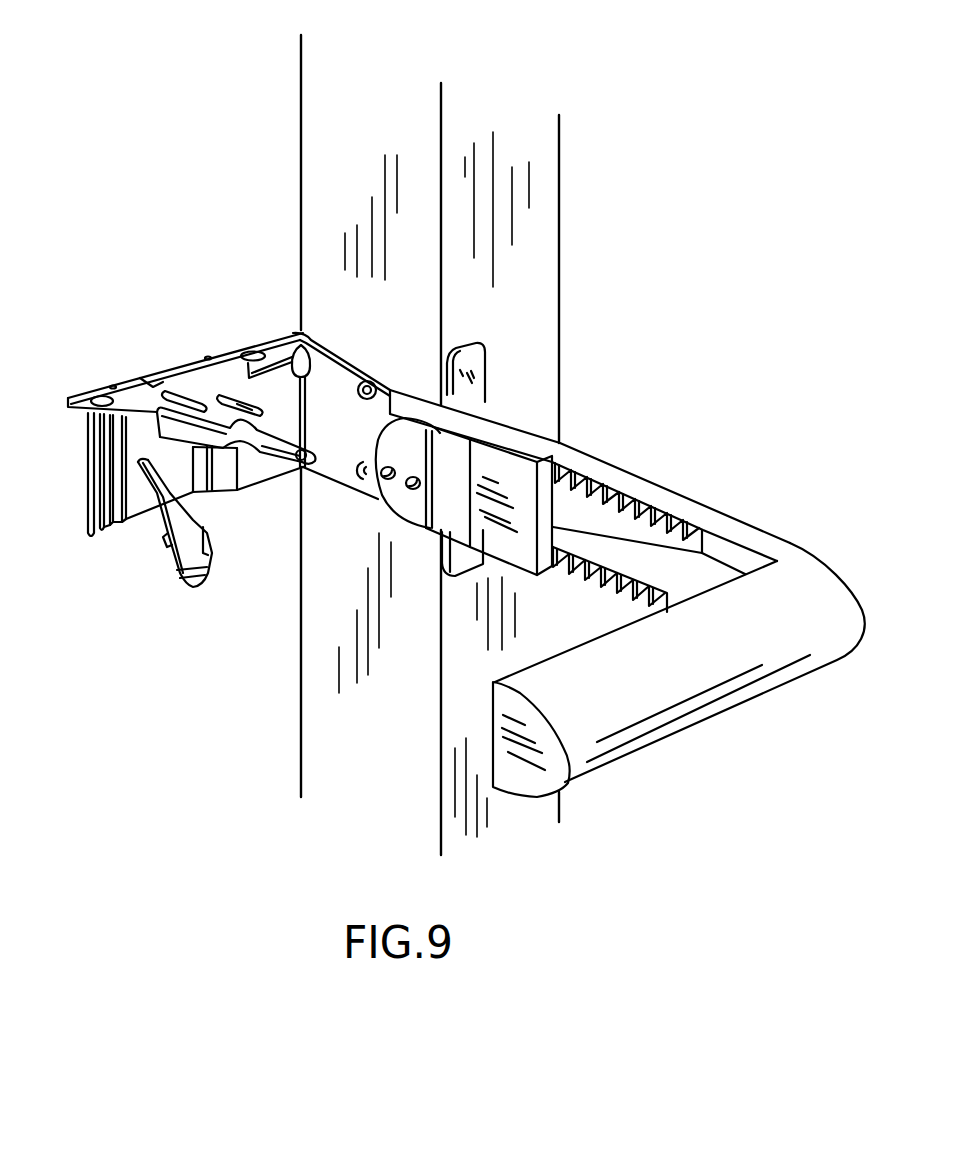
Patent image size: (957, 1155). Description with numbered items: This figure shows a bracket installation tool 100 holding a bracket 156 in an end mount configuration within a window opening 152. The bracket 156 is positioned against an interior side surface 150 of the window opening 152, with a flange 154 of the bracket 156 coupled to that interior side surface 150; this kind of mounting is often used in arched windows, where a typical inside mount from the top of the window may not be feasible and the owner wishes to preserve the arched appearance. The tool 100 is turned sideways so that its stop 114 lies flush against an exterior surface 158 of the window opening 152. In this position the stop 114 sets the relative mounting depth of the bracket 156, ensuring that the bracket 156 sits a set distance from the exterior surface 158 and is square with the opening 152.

The bracket installation tool 100 is at (724, 450).
The stop 114 is at (484, 392).
The interior side surface 150 is at (346, 734).
The window opening 152 is at (256, 150).
The flange 154 is at (332, 398).
The bracket 156 is at (149, 365).
The exterior surface 158 is at (527, 295).